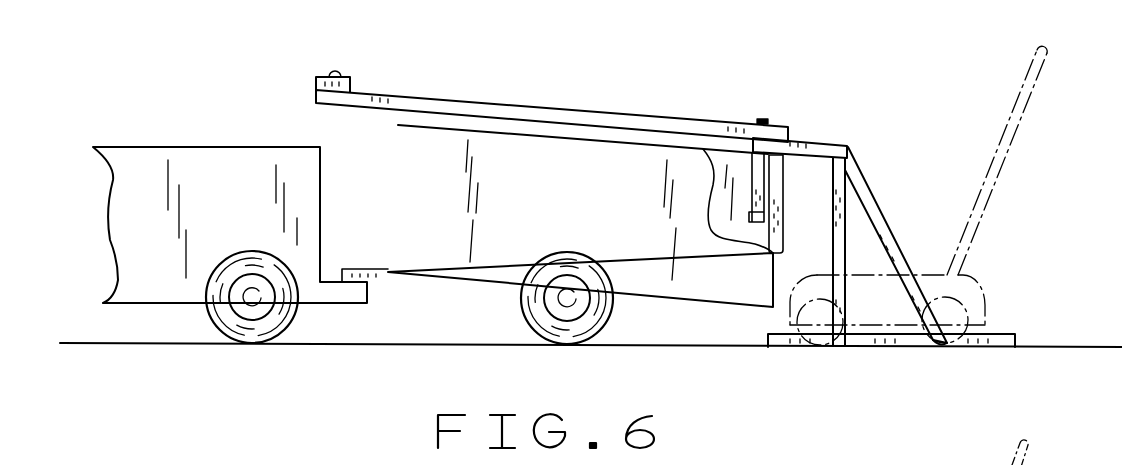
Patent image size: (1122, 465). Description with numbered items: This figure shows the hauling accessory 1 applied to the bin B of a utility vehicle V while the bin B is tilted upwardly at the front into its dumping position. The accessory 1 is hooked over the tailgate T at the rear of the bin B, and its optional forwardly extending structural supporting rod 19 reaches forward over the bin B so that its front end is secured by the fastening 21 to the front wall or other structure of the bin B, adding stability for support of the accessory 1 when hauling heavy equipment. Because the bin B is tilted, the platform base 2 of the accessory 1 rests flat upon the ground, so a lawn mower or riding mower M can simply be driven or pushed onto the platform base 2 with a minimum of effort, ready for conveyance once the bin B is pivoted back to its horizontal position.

The accessory 1 is at (868, 144).
The platform base 2 is at (989, 350).
The forwardly extending structure 19 is at (517, 110).
The fastening 21 is at (335, 73).
The utility vehicle V is at (237, 213).
The bin B is at (573, 212).
The tailgate T is at (780, 189).
The lawn mower M is at (979, 277).